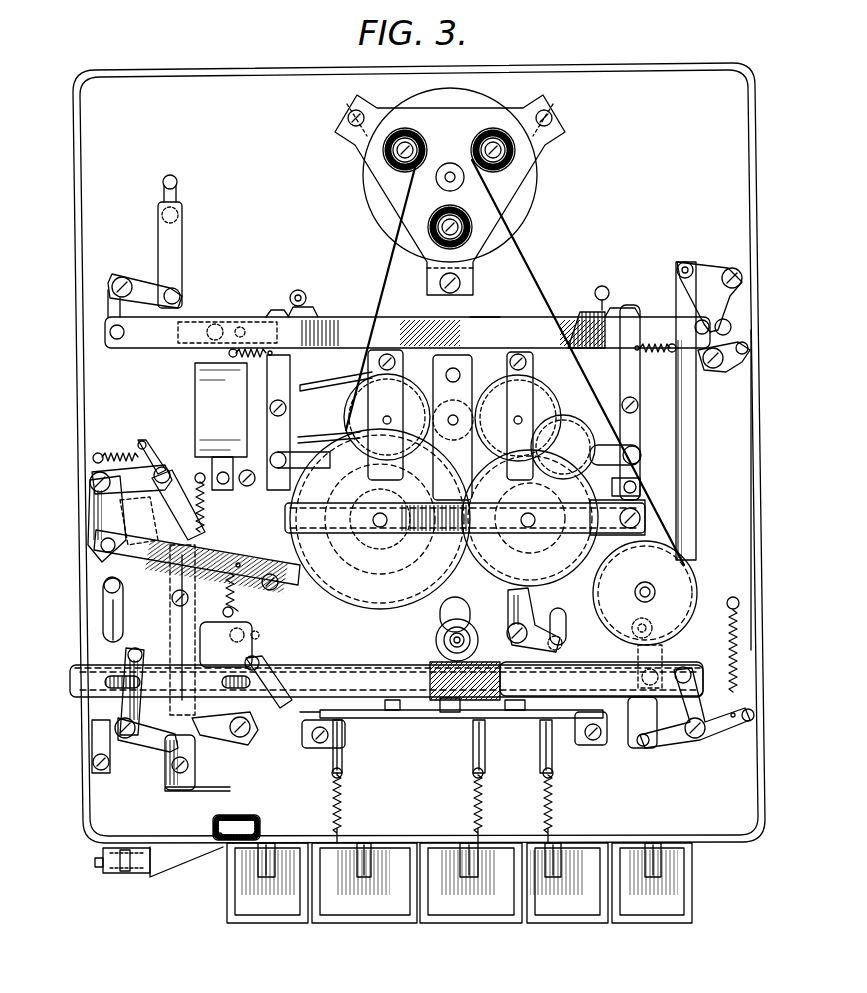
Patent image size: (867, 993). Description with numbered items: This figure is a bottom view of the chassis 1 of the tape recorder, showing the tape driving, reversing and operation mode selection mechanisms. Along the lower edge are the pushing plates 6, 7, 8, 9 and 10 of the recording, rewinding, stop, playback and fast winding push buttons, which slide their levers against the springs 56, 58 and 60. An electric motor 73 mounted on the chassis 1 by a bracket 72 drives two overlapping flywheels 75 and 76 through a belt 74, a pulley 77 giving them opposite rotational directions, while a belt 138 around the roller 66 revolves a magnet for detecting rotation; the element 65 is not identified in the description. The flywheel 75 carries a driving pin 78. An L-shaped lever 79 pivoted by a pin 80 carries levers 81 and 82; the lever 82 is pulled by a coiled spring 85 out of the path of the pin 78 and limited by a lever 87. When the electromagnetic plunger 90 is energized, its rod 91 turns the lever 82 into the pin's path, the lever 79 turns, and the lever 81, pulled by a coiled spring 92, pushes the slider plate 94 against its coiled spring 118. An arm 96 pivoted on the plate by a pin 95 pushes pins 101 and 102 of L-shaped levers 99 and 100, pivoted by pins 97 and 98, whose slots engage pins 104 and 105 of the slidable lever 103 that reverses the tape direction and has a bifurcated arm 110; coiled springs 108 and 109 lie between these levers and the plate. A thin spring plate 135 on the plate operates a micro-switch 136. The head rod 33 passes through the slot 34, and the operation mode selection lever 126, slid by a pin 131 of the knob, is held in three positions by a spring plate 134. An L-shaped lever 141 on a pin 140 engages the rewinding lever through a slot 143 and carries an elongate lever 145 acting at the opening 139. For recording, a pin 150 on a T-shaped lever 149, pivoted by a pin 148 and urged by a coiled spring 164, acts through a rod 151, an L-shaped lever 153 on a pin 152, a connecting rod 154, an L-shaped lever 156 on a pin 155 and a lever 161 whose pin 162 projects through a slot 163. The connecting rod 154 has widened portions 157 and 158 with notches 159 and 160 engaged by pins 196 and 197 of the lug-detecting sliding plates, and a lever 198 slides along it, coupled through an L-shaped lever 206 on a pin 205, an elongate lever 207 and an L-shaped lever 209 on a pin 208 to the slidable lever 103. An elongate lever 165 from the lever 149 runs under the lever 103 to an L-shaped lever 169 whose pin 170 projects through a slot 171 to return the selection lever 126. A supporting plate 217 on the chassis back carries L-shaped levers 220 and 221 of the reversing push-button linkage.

The chassis 1 is at (84, 379).
The pushing plate 6 is at (648, 843).
The pushing plate 7 is at (562, 843).
The pushing plate 8 is at (462, 843).
The pushing plate 9 is at (370, 843).
The pushing plate 10 is at (260, 843).
The rod 33 is at (436, 645).
The slot 34 is at (440, 618).
The spring 56 is at (556, 796).
The spring 58 is at (484, 796).
The spring 60 is at (345, 796).
The wheel 65 is at (550, 412).
The roller 66 is at (433, 384).
The bracket 72 is at (512, 179).
The electric motor 73 is at (376, 187).
The belt 74 is at (515, 250).
The flywheel 75 is at (368, 603).
The flywheel 76 is at (557, 580).
The pulley 77 is at (688, 582).
The driving pin 78 is at (388, 547).
The L-shaped lever 79 is at (92, 512).
The pin 80 is at (90, 481).
The lever 81 is at (160, 492).
The lever 82 is at (105, 568).
The coiled spring 85 is at (234, 600).
The lever 87 is at (246, 458).
The electromagnetic plunger 90 is at (196, 381).
The rod 91 is at (204, 512).
The coiled spring 92 is at (124, 445).
The slider plate 94 is at (196, 760).
The pin 95 is at (172, 610).
The arm 96 is at (225, 644).
The pin 97 is at (260, 730).
The pin 98 is at (118, 740).
The L-shaped lever 99 is at (256, 712).
The L-shaped lever 100 is at (120, 703).
The pin 101 is at (192, 738).
The pin 102 is at (160, 745).
The slidable lever 103 is at (432, 693).
The pin 104 is at (262, 652).
The pin 105 is at (130, 658).
The coiled spring 108 is at (250, 632).
The coiled spring 109 is at (168, 655).
The bifurcated arm 110 is at (495, 690).
The coiled spring 118 is at (190, 452).
The operation mode selection lever 126 is at (118, 873).
The pin 131 is at (96, 865).
The spring plate 134 is at (108, 775).
The thin spring plate 135 is at (232, 789).
The micro-switch 136 is at (238, 815).
The belt 138 is at (318, 388).
The opening 139 is at (160, 525).
The pin 140 is at (510, 636).
The L-shaped lever 141 is at (514, 610).
The slot 143 is at (566, 630).
The elongate lever 145 is at (282, 585).
The pin 148 is at (702, 738).
The T-shaped lever 149 is at (682, 740).
The pin 150 is at (641, 748).
The rod 151 is at (750, 461).
The pin 152 is at (715, 370).
The L-shaped lever 153 is at (697, 354).
The connecting rod 154 is at (163, 345).
The pin 155 is at (120, 277).
The L-shaped lever 156 is at (146, 282).
The widened portion 157 is at (620, 308).
The widened portion 158 is at (275, 309).
The notch 159 is at (592, 310).
The notch 160 is at (310, 307).
The lever 161 is at (182, 248).
The pin 162 is at (178, 215).
The slot 163 is at (177, 182).
The coiled spring 164 is at (735, 645).
The elongate lever 165 is at (350, 668).
The L-shaped lever 169 is at (110, 600).
The pin 170 is at (104, 584).
The slot 171 is at (105, 632).
The pin 196 is at (604, 286).
The pin 197 is at (298, 290).
The lever 198 is at (482, 317).
The pin 205 is at (737, 268).
The L-shaped lever 206 is at (692, 247).
The elongate lever 207 is at (690, 420).
The pin 208 is at (642, 618).
The L-shaped lever 209 is at (638, 660).
The supporting plate 217 is at (384, 720).
The L-shaped lever 220 is at (345, 722).
The L-shaped lever 221 is at (540, 735).